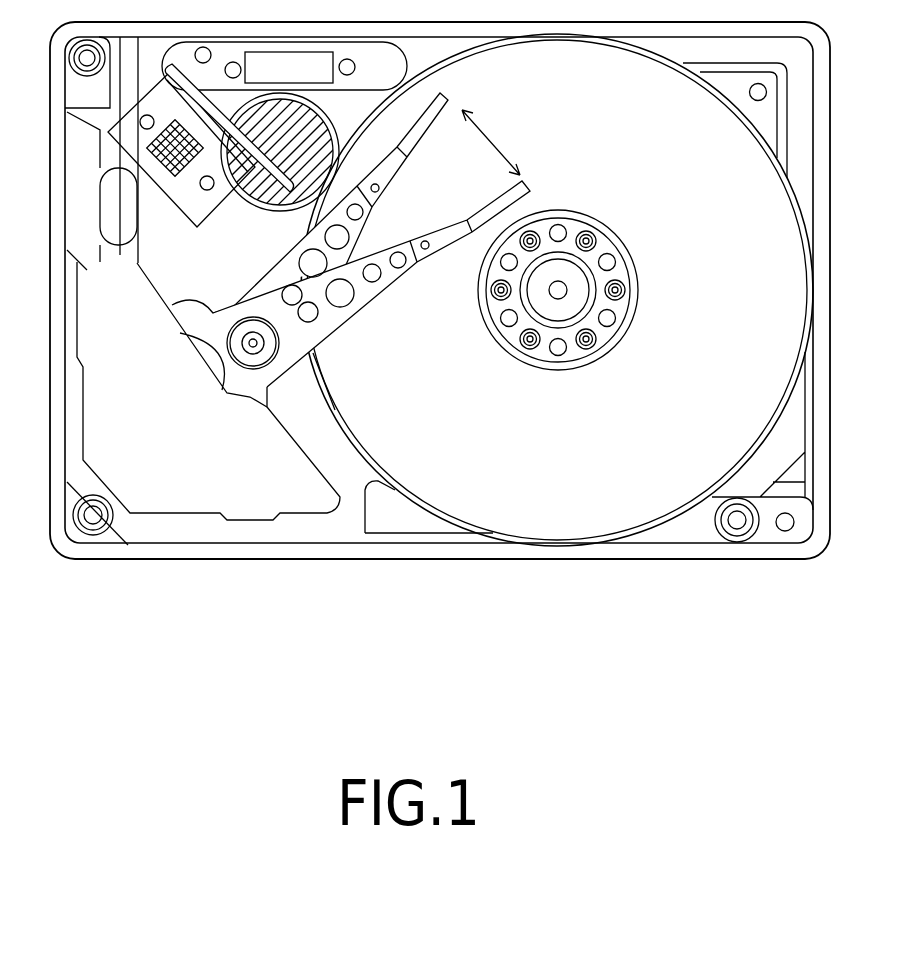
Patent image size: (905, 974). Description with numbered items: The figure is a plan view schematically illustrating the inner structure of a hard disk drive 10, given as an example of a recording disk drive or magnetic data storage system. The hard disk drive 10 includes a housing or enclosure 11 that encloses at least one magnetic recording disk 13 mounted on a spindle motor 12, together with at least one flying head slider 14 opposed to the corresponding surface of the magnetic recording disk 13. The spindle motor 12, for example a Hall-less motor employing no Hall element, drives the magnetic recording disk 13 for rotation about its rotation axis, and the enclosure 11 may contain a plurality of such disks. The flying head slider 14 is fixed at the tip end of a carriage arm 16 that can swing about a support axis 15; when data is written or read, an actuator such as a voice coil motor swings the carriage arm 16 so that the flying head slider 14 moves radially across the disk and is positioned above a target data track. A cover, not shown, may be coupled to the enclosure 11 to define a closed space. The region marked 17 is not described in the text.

The hard disk drive 10 is at (370, 583).
The housing or enclosure 11 is at (723, 560).
The spindle motor 12 is at (587, 307).
The magnetic recording disk 13 is at (577, 546).
The flying head slider 14 is at (545, 170).
The support axis 15 is at (270, 347).
The carriage arm 16 is at (393, 278).
The circuit board region 17 is at (188, 472).